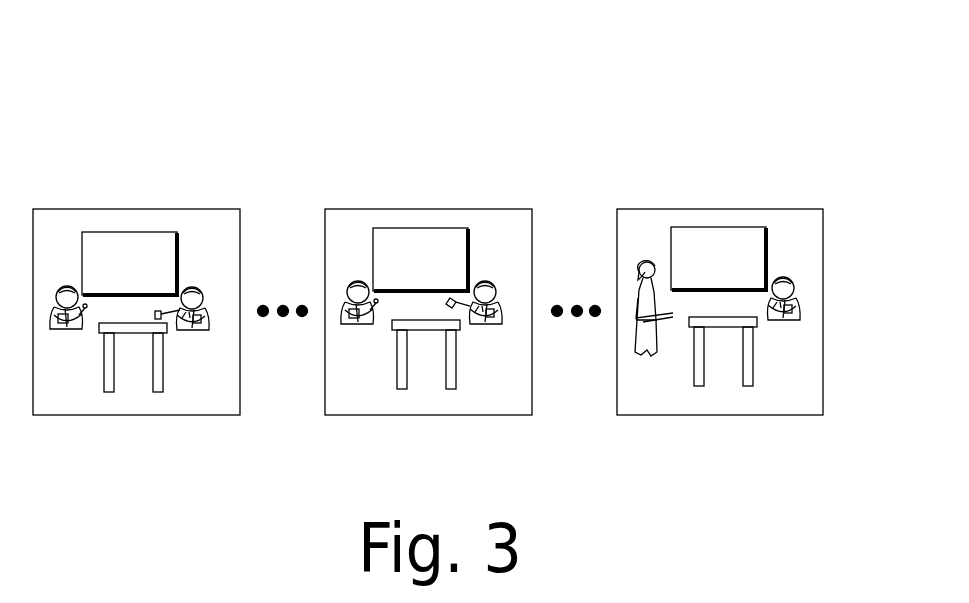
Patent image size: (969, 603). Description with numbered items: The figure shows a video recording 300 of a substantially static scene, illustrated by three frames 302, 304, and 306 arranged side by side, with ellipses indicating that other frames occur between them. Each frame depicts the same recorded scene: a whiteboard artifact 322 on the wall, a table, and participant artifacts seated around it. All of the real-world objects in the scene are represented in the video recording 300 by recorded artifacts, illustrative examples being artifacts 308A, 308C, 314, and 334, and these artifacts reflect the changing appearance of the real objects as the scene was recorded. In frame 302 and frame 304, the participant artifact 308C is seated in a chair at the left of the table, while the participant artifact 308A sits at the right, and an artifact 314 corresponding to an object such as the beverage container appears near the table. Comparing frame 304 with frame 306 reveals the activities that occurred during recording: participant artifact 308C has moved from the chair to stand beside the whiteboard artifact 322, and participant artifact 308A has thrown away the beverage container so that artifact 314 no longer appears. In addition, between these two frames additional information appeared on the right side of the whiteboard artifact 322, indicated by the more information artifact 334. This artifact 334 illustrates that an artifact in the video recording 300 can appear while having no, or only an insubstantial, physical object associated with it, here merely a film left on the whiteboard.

The video recording 300 is at (445, 105).
The frame 302 is at (38, 209).
The frame 304 is at (338, 209).
The frame 306 is at (737, 209).
The artifact 308A is at (197, 330).
The artifact 308C is at (65, 287).
The artifact 314 is at (170, 337).
The artifact 322 is at (177, 232).
The more information artifact 334 is at (718, 238).